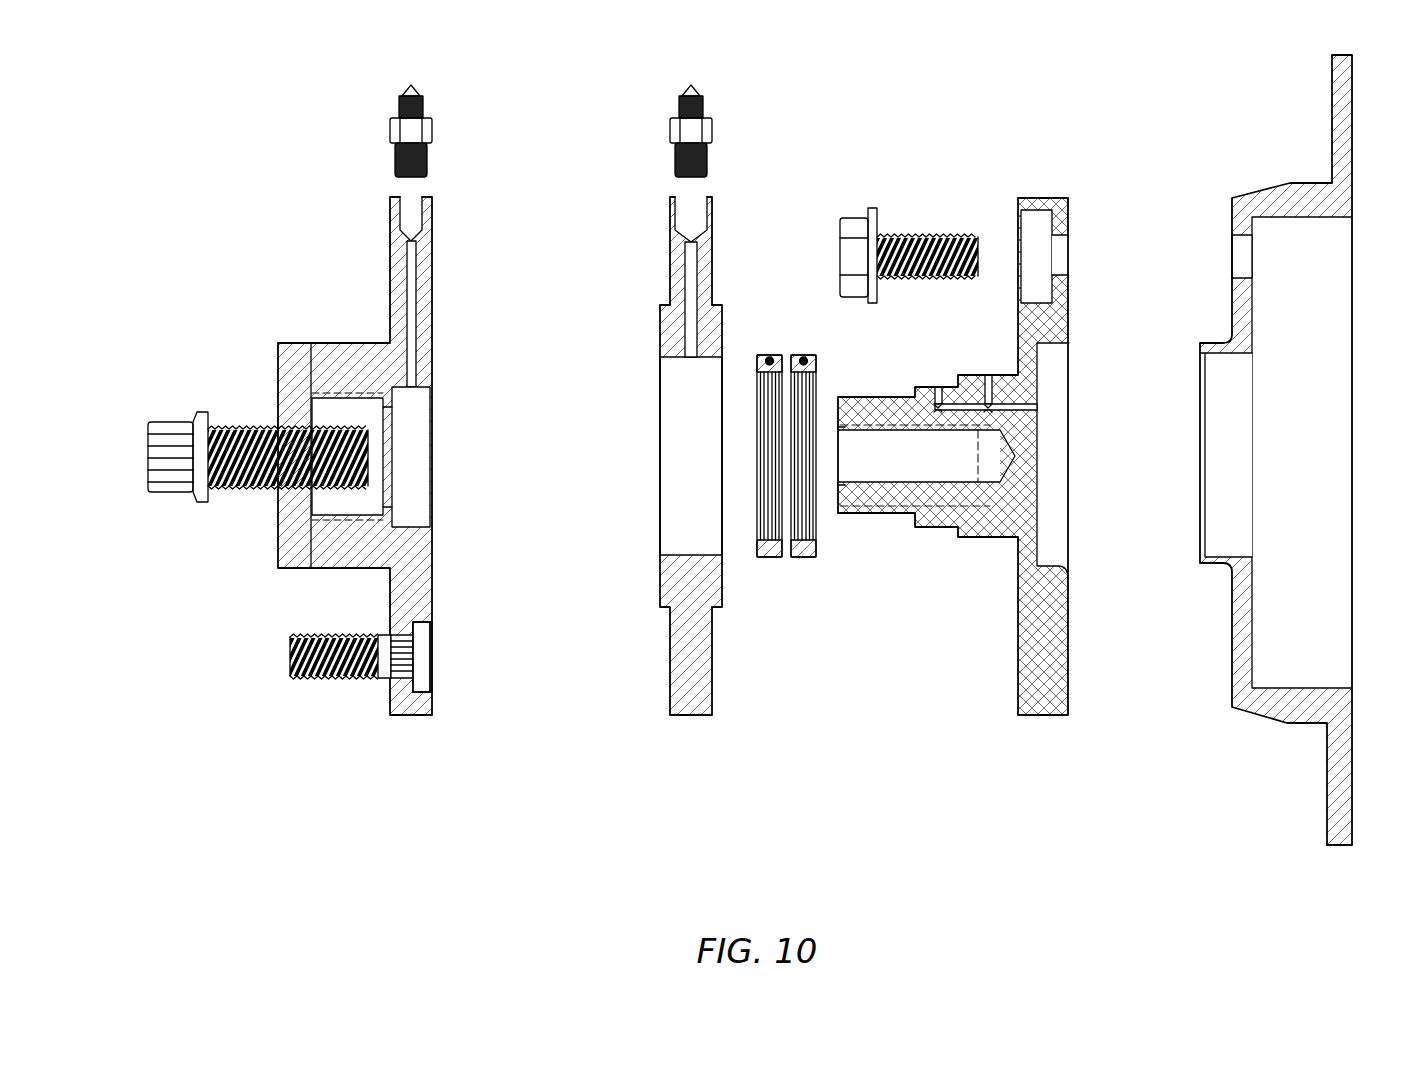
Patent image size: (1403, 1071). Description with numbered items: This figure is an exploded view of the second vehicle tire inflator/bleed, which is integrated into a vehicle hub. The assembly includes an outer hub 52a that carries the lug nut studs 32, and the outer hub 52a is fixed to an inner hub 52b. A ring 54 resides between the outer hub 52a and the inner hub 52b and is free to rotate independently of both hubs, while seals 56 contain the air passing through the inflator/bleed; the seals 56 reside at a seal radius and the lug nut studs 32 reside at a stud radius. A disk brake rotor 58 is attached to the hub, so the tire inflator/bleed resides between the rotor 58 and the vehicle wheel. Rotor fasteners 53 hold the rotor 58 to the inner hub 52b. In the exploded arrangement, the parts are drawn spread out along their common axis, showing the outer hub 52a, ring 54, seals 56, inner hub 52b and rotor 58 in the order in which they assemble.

The lug nut studs 32 is at (258, 457).
The outer hub 52a is at (307, 678).
The inner hub 52b is at (1047, 690).
The rotor fasteners 53 is at (912, 233).
The ring 54 is at (687, 703).
The seals 56 is at (755, 571).
The disk brake rotor 58 is at (1340, 777).